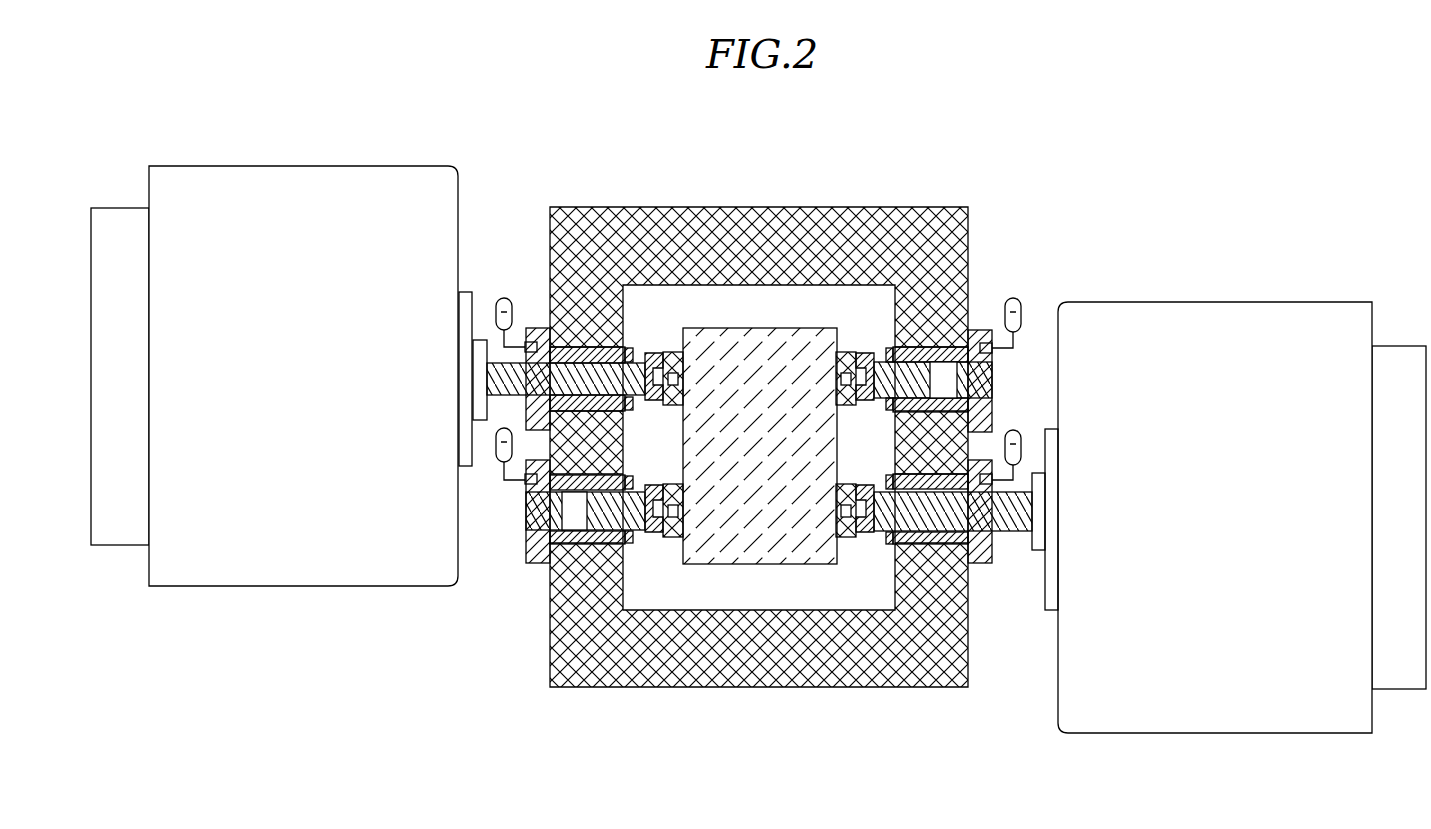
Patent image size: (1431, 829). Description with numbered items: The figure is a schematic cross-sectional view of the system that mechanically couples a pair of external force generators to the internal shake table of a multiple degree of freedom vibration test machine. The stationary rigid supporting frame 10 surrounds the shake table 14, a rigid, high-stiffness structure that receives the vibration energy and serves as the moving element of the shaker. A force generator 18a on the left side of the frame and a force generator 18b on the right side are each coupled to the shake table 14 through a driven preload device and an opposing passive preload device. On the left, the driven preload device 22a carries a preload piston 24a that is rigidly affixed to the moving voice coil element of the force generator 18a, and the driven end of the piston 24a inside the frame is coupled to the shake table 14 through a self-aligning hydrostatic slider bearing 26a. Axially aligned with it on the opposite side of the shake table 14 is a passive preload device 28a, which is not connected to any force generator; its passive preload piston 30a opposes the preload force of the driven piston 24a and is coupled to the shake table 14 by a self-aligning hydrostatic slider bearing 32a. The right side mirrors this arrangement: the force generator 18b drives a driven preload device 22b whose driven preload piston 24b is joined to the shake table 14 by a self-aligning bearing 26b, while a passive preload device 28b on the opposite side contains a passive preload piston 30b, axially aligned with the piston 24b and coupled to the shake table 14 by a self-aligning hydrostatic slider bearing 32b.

The supporting frame 10 is at (777, 217).
The shake table 14 is at (709, 333).
The force generator 18a is at (362, 182).
The force generator 18b is at (1204, 319).
The driven preload device 22a is at (662, 350).
The driven preload device 22b is at (859, 578).
The preload piston 24a is at (605, 348).
The driven preload piston 24b is at (907, 507).
The self-aligning hydrostatic slider bearing 26a is at (648, 322).
The self-aligning bearing 26b is at (893, 406).
The passive preload device 28a is at (848, 352).
The passive preload device 28b is at (647, 575).
The passive preload piston 30a is at (918, 346).
The passive preload piston 30b is at (594, 507).
The self-aligning hydrostatic slider bearing 32a is at (874, 320).
The self-aligning hydrostatic slider bearing 32b is at (678, 533).